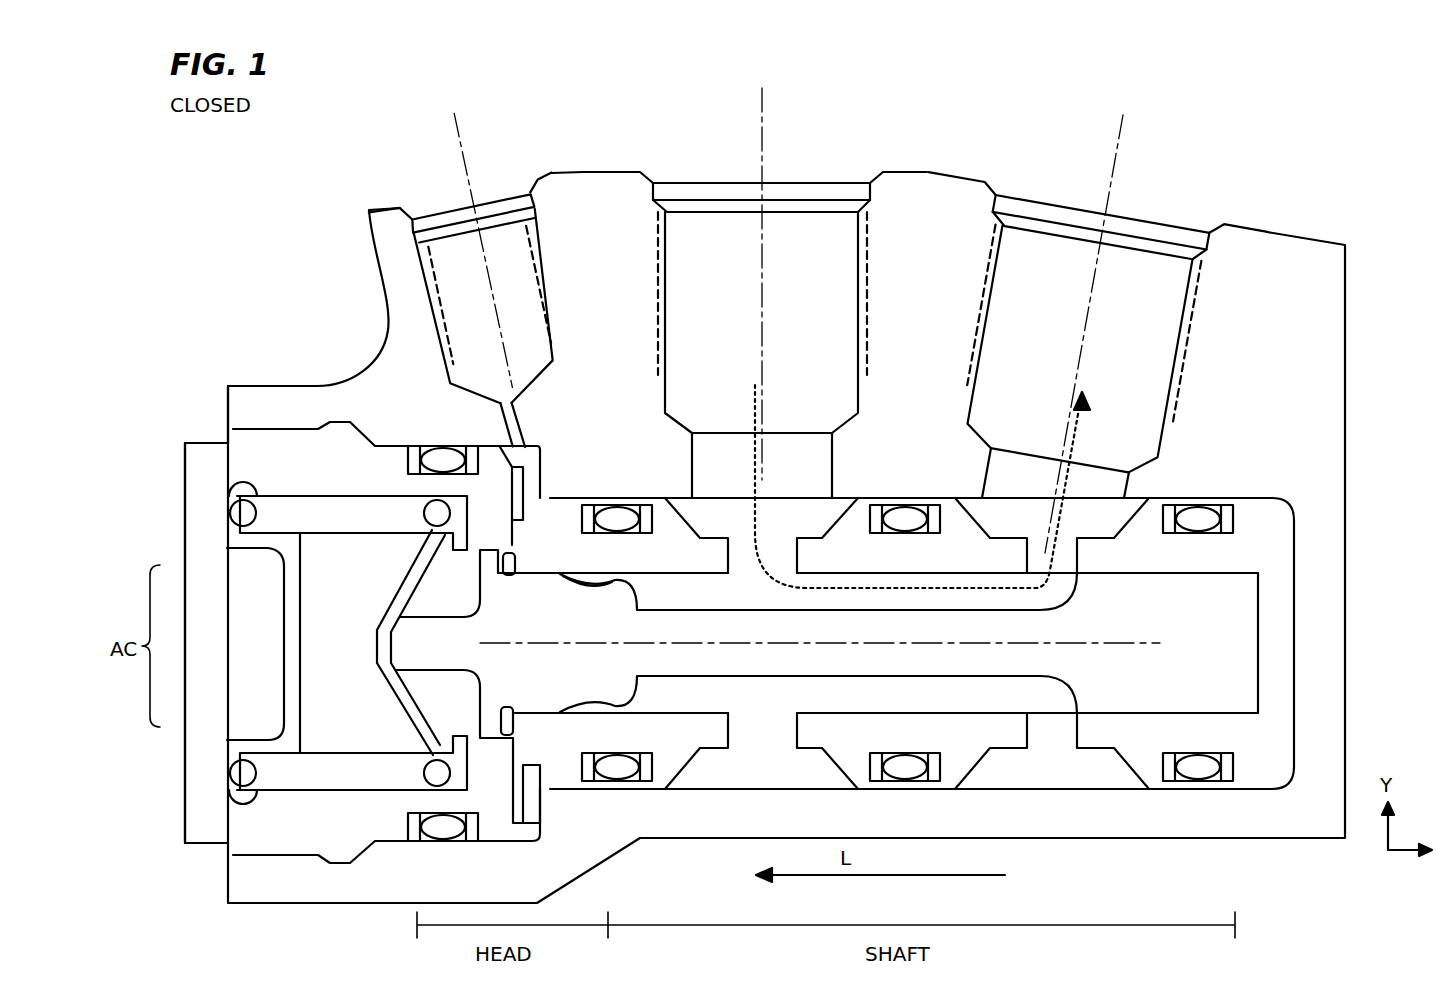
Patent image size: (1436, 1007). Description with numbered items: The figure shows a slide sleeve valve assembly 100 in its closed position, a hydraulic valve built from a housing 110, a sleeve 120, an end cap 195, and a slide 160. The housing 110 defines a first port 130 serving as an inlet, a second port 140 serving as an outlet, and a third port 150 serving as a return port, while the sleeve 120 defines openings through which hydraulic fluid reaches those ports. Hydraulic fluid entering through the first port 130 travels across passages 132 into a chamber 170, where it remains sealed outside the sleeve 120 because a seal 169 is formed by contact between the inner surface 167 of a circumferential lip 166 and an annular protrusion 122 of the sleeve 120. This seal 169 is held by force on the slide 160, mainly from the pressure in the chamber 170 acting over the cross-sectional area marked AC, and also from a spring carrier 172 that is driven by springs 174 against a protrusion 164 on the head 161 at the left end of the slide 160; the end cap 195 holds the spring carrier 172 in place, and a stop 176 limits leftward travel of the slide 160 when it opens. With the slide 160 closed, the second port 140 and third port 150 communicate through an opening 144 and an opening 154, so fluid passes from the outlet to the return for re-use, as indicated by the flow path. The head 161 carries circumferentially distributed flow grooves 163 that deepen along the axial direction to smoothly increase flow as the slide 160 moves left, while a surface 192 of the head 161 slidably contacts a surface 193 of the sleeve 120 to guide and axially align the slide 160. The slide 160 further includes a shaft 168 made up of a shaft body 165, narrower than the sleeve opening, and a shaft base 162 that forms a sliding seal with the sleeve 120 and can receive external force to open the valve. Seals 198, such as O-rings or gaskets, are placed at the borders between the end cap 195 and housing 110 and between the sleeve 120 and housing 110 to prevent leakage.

The slide sleeve valve assembly 100 is at (1305, 82).
The housing 110 is at (383, 265).
The sleeve 120 is at (563, 771).
The annular protrusion 122 is at (515, 739).
The first port 130 is at (522, 272).
The passages 132 is at (521, 407).
The second port 140 is at (843, 385).
The opening 144 is at (818, 507).
The third port 150 is at (1158, 325).
The opening 154 is at (998, 510).
The slide 160 is at (1248, 597).
The head 161 is at (482, 682).
The shaft base 162 is at (1268, 616).
The flow grooves 163 is at (600, 592).
The protrusion 164 is at (405, 684).
The shaft body 165 is at (700, 662).
The circumferential lip 166 is at (432, 743).
The inner surface 167 is at (515, 709).
The shaft 168 is at (1037, 621).
The seal 169 is at (503, 752).
The chamber 170 is at (496, 527).
The spring carrier 172 is at (400, 585).
The springs 174 is at (376, 496).
The stop 176 is at (285, 628).
The surface 192 is at (545, 590).
The surface 193 is at (552, 572).
The end cap 195 is at (183, 505).
The seals 198 is at (445, 452).